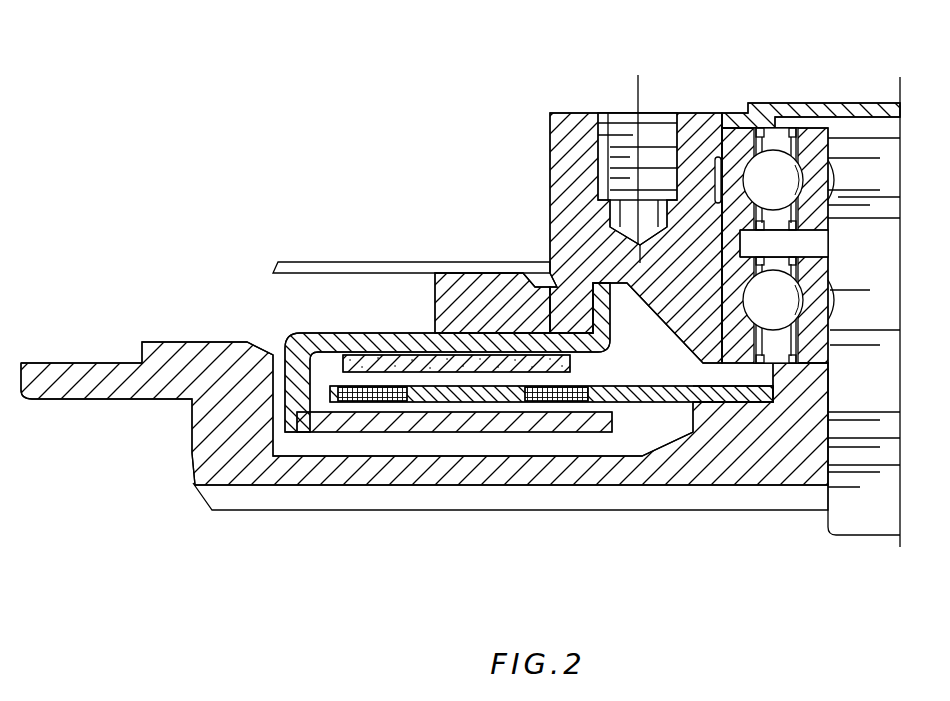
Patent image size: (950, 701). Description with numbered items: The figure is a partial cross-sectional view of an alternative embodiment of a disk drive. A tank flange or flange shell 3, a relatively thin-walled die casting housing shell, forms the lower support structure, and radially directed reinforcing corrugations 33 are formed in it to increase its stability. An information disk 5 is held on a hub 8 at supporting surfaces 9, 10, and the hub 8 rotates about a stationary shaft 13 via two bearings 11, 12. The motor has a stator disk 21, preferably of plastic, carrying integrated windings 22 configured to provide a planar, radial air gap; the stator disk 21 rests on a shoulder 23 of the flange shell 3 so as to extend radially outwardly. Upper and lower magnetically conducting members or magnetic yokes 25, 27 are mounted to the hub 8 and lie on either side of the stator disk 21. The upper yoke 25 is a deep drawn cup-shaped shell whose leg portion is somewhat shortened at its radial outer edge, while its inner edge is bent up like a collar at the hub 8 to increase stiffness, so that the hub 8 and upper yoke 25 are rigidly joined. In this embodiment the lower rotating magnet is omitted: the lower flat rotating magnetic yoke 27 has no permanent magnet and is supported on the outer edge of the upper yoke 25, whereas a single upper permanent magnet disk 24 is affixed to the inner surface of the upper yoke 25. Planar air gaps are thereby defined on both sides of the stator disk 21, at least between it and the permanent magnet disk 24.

The flange shell 3 is at (222, 473).
The reinforcing corrugations 33 is at (318, 497).
The information disks 5 is at (326, 268).
The hub 8 is at (577, 123).
The supporting surface 9 is at (470, 287).
The supporting surface 10 is at (550, 178).
The bearing 11 is at (785, 195).
The bearing 12 is at (785, 313).
The stationary shaft 13 is at (868, 513).
The stator disk 21 is at (440, 402).
The integrated windings 22 is at (553, 402).
The shoulder 23 is at (758, 402).
The permanent magnet disk 24 is at (372, 357).
The upper magnetic yoke 25 is at (316, 340).
The lower magnetic yoke 27 is at (495, 423).